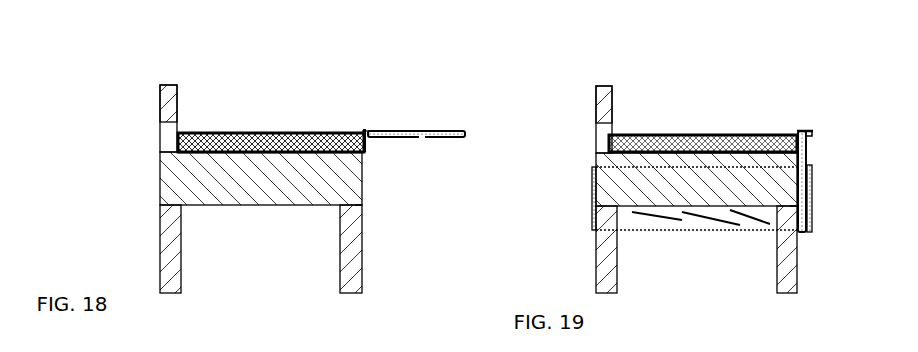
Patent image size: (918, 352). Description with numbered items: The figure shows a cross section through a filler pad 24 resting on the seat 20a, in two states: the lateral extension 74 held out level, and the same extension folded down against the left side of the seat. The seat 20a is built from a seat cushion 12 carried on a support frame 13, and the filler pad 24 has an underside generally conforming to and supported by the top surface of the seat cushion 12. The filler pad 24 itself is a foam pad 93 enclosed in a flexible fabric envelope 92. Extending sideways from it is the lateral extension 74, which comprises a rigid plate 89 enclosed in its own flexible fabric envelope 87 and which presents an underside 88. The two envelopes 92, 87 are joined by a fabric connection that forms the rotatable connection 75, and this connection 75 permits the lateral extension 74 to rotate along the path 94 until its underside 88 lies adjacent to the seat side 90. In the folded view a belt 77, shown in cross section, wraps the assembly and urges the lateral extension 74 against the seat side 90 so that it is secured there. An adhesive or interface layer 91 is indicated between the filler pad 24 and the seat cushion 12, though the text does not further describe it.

In FIG. 18, the seat 20a is at (288, 176).
In FIG. 18, the seat cushion 12 is at (174, 182).
In FIG. 18, the support frame 13 is at (163, 290).
In FIG. 18, the filler pad 24 is at (216, 85).
In FIG. 19, the filler pad 24 is at (701, 134).
In FIG. 18, the lateral extension 74 is at (458, 100).
In FIG. 19, the lateral extension 74 is at (803, 234).
In FIG. 18, the rotatable connection 75 is at (366, 127).
In FIG. 19, the rotatable connection 75 is at (794, 131).
In FIG. 19, the belt 77 is at (591, 214).
In FIG. 18, the flexible fabric envelope 87 is at (441, 127).
In FIG. 18, the underside 88 is at (489, 122).
In FIG. 18, the rigid plate 89 is at (423, 139).
In FIG. 18, the seat side 90 is at (367, 206).
In FIG. 19, the seat side 90 is at (796, 212).
In FIG. 18, the adhesive layer 91 is at (271, 154).
In FIG. 18, the flexible fabric envelope 92 is at (259, 131).
In FIG. 18, the foam pad 93 is at (307, 137).
In FIG. 18, the path 94 is at (372, 199).